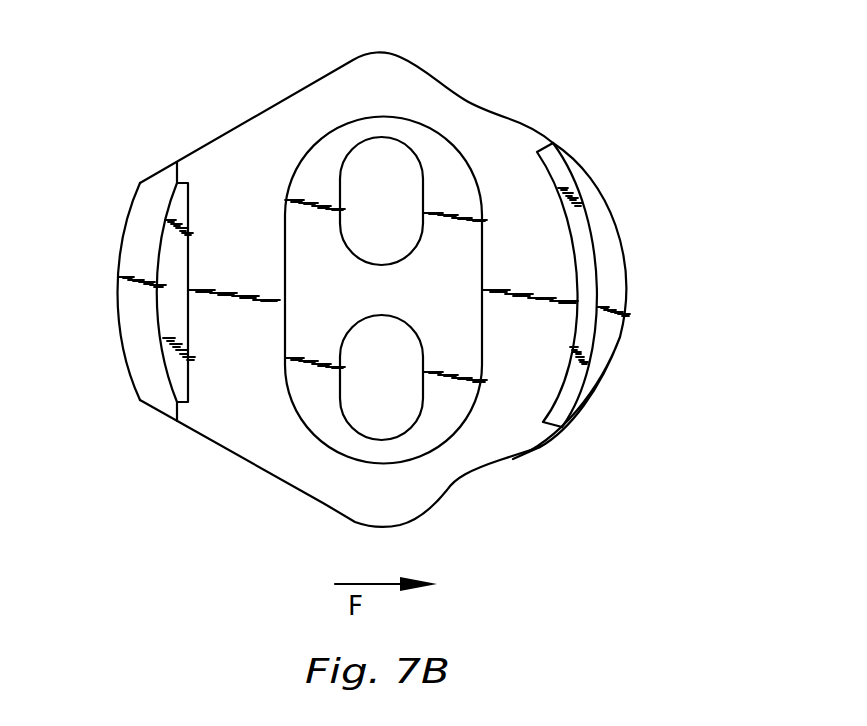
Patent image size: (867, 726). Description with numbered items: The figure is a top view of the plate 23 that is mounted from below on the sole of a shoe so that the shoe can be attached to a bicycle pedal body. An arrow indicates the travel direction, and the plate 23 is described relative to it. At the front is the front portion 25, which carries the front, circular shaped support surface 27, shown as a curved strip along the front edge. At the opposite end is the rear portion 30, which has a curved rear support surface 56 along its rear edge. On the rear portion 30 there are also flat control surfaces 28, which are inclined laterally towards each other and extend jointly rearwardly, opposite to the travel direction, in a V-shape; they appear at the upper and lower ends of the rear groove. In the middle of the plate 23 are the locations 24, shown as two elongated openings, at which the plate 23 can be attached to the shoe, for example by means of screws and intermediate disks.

The plate 23 is at (267, 104).
The locations 24 is at (403, 173).
The front portion 25 is at (617, 263).
The front circular shaped support surface 27 is at (605, 199).
The flat control surfaces 28 is at (149, 174).
The rear portion 30 is at (138, 222).
The curved rear support surface 56 is at (116, 309).